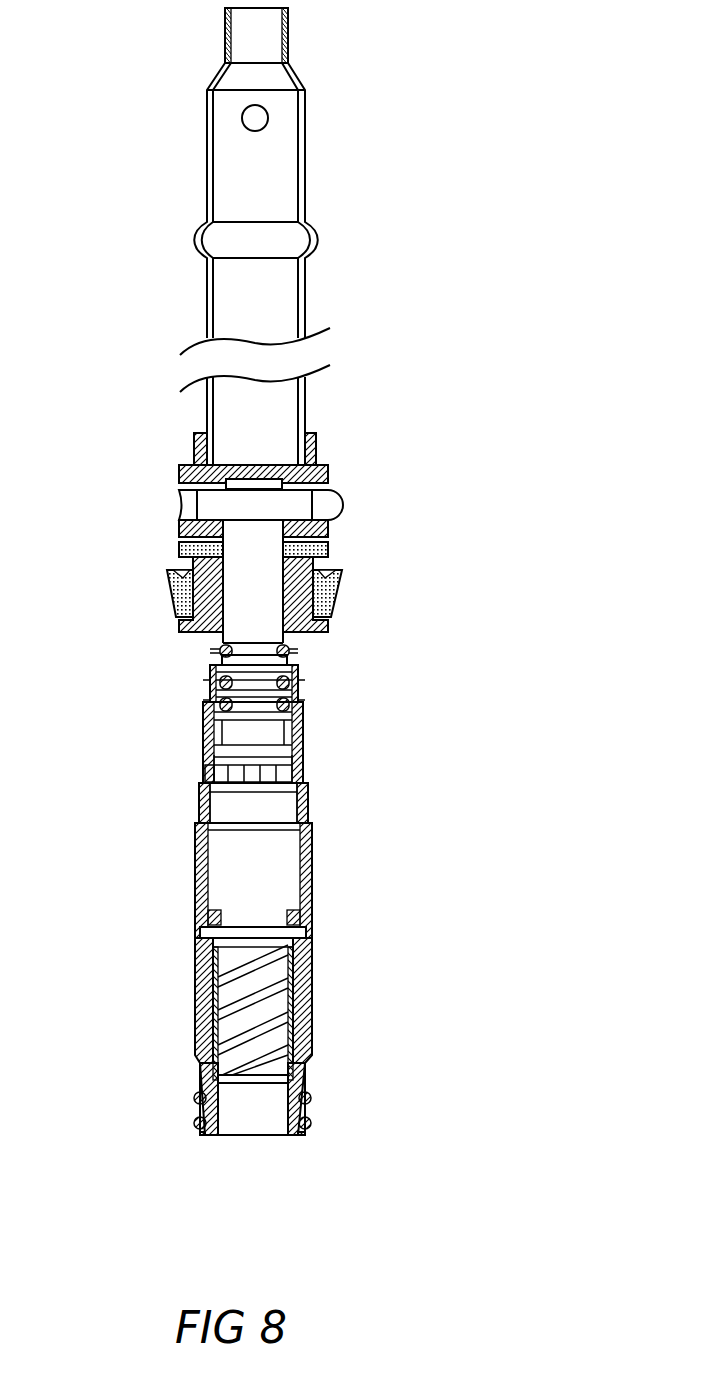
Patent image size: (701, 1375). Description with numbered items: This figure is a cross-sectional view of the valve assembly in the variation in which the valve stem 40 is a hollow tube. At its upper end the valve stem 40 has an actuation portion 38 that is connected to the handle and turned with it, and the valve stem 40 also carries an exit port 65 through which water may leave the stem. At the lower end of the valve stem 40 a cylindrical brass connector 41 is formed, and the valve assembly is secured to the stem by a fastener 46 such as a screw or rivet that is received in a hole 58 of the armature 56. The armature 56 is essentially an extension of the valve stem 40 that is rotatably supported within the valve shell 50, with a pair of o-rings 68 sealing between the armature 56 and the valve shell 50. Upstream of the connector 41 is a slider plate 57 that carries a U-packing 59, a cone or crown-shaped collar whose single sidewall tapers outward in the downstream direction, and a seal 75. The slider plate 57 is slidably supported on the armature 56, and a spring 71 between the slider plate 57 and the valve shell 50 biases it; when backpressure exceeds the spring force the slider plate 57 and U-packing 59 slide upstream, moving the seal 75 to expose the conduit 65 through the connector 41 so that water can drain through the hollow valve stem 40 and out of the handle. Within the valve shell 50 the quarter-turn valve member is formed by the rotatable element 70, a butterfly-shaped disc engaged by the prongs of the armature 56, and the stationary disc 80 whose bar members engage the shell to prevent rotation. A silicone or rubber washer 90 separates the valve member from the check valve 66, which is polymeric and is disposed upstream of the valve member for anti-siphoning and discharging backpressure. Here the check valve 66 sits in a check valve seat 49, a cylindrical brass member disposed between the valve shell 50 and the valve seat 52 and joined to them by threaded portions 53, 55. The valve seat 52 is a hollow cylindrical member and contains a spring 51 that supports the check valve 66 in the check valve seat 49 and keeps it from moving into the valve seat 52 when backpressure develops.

The actuation portion 38 is at (290, 33).
The conduit 65 is at (262, 118).
The valve stem 40 is at (305, 292).
The connector 41 is at (316, 445).
The fastener 46 is at (338, 505).
The seal 75 is at (180, 545).
The slider plate 57 is at (317, 562).
The U-packing 59 is at (176, 597).
The armature 56 is at (275, 637).
The o-rings 68 is at (213, 707).
The spring 71 is at (298, 700).
The valve shell 50 is at (303, 735).
The rotatable element 70 is at (275, 755).
The stationary disc 80 is at (207, 768).
The washer 90 is at (207, 785).
The threaded portion 53 is at (198, 815).
The check valve seat 49 is at (312, 842).
The check valve 66 is at (280, 887).
The threaded portion 55 is at (195, 955).
The valve seat 52 is at (308, 1022).
The spring 51 is at (300, 1063).
The hole 58 is at (311, 1095).